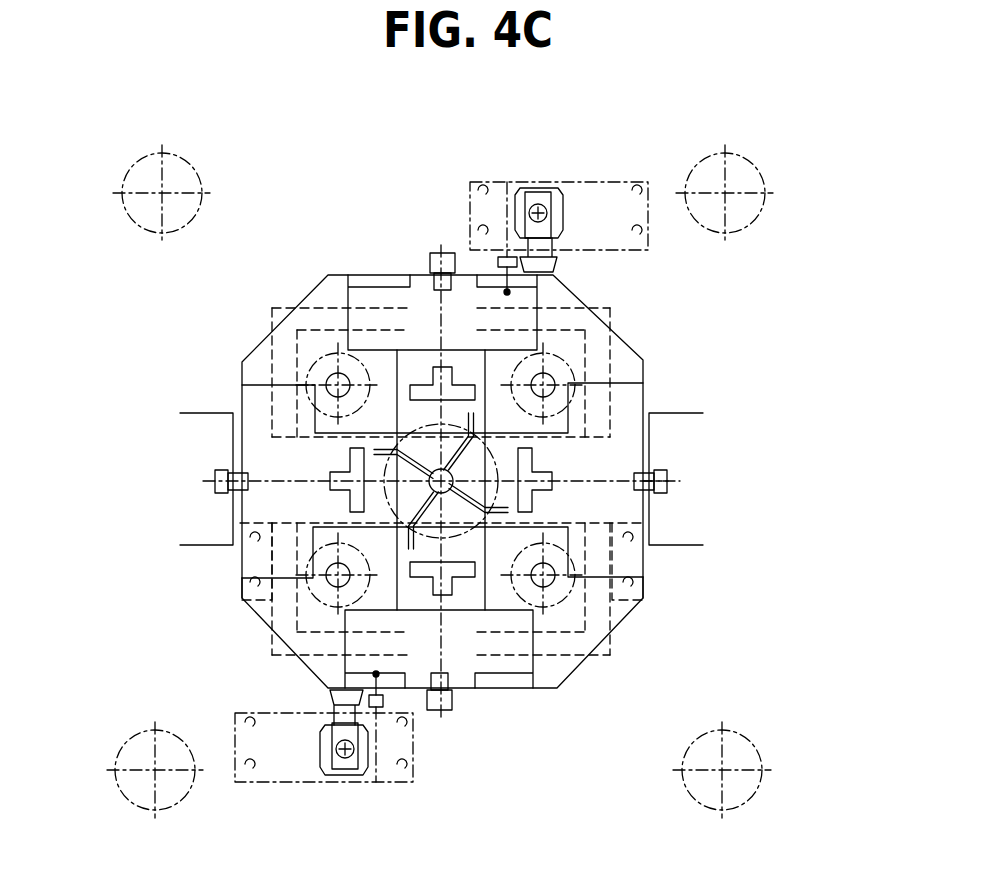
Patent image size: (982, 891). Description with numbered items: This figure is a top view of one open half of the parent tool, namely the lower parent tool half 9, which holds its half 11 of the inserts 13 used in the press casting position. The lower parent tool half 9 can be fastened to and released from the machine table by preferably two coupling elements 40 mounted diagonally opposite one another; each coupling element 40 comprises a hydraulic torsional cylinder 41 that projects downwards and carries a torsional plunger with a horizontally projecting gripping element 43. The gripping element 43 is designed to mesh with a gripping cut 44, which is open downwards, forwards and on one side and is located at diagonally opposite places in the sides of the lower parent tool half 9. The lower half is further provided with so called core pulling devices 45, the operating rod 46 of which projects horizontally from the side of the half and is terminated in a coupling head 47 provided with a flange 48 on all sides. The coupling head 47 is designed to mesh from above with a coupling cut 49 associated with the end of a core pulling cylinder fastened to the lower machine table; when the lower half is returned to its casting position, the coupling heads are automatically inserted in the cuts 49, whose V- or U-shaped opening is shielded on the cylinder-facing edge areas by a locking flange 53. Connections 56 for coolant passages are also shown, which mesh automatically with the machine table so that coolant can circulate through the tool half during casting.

The lower parent tool half 9 is at (328, 292).
The half of inserts 11 is at (555, 460).
The inserts 13 is at (500, 348).
The coupling element 40 is at (295, 728).
The hydraulic torsional cylinder 41 is at (370, 747).
The gripping element 43 is at (298, 750).
The gripping cut 44 is at (328, 692).
The core pulling device 45 is at (672, 553).
The operating rod 46 is at (645, 521).
The coupling head 47 is at (664, 516).
The flange 48 is at (666, 478).
The coupling cut 49 is at (660, 492).
The locking flange 53 is at (655, 467).
The connection for coolant passages 56 is at (662, 547).